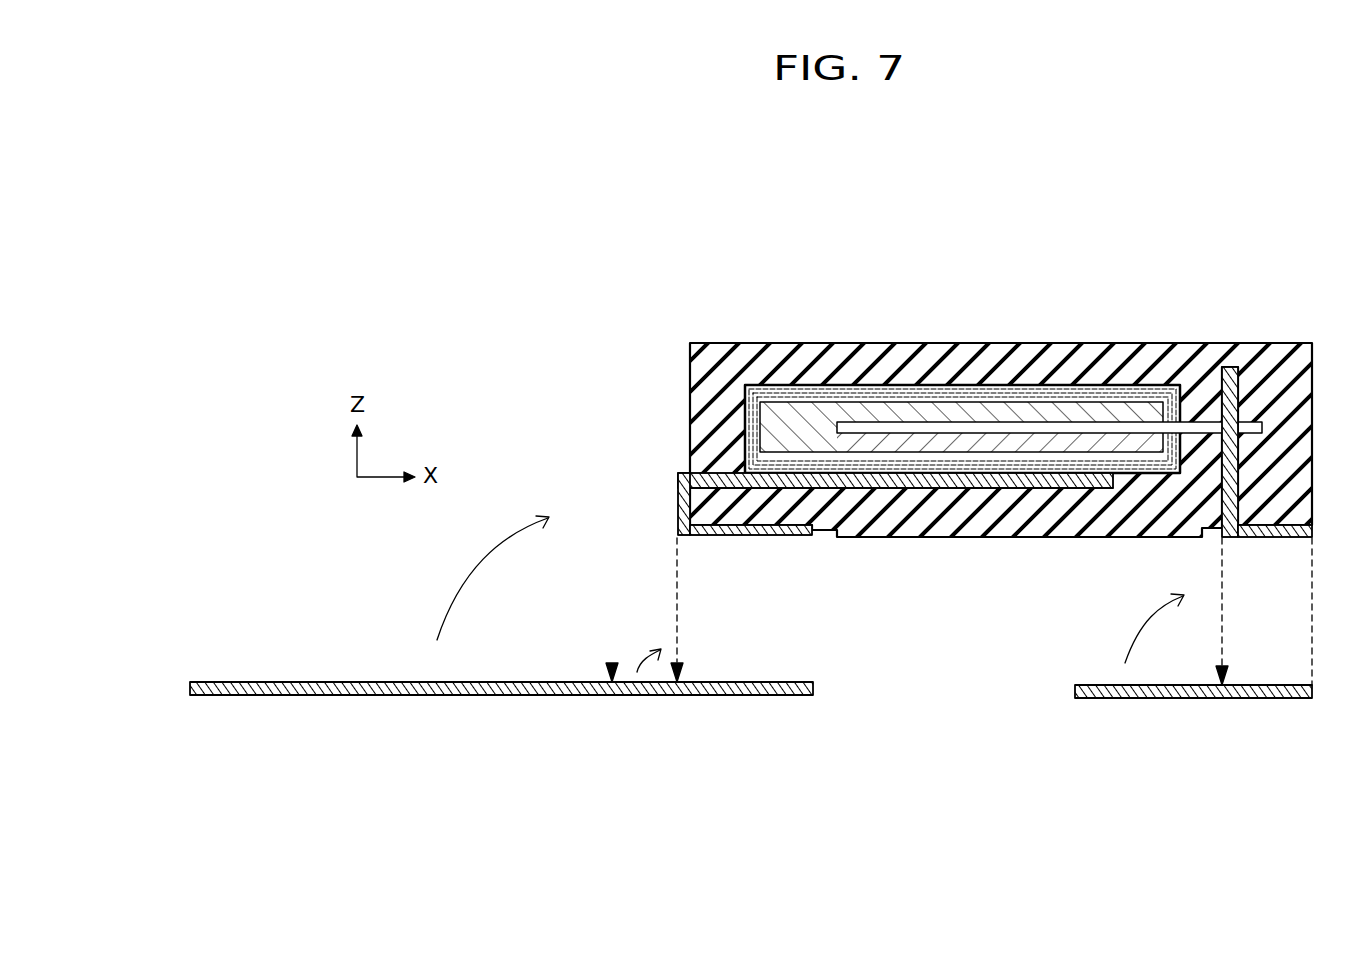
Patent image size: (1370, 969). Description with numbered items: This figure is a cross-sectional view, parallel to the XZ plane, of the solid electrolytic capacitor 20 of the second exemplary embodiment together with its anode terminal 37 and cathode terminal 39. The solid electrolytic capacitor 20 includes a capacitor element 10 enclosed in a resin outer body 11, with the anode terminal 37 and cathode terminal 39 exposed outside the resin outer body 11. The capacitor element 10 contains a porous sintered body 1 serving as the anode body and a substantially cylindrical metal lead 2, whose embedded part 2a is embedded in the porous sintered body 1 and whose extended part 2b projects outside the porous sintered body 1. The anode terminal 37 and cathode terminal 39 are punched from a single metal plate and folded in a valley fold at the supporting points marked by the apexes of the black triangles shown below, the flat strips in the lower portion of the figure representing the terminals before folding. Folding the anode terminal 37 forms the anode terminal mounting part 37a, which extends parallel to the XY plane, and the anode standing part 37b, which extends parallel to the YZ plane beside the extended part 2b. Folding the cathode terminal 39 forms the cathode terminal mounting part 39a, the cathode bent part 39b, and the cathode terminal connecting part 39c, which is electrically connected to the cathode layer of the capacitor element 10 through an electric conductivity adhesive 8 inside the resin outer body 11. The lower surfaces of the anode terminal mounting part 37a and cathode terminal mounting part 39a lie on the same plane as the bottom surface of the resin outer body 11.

The porous sintered body 1 is at (817, 415).
The metal lead 2 is at (1253, 277).
The embedded part 2a is at (1153, 362).
The extended part 2b is at (1251, 385).
The electric conductivity adhesive 8 is at (1000, 490).
The capacitor element 10 is at (1034, 372).
The resin outer body 11 is at (917, 360).
The solid electrolytic capacitor 20 is at (748, 292).
The anode terminal 37 is at (1057, 634).
The anode terminal mounting part 37a is at (1255, 538).
The anode standing part 37b is at (1222, 470).
The cathode terminal 39 is at (783, 637).
The cathode terminal mounting part 39a is at (768, 538).
The cathode bent part 39b is at (678, 503).
The cathode terminal connecting part 39c is at (932, 490).